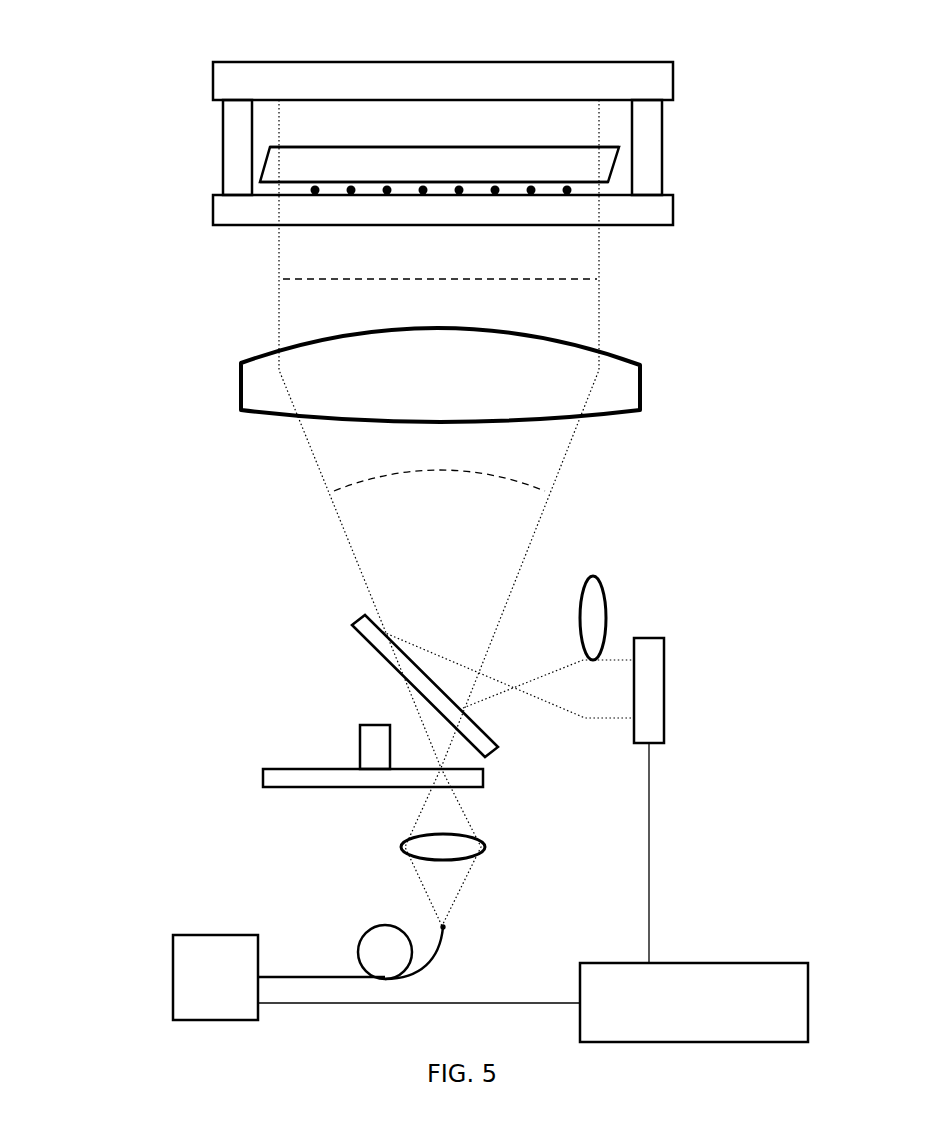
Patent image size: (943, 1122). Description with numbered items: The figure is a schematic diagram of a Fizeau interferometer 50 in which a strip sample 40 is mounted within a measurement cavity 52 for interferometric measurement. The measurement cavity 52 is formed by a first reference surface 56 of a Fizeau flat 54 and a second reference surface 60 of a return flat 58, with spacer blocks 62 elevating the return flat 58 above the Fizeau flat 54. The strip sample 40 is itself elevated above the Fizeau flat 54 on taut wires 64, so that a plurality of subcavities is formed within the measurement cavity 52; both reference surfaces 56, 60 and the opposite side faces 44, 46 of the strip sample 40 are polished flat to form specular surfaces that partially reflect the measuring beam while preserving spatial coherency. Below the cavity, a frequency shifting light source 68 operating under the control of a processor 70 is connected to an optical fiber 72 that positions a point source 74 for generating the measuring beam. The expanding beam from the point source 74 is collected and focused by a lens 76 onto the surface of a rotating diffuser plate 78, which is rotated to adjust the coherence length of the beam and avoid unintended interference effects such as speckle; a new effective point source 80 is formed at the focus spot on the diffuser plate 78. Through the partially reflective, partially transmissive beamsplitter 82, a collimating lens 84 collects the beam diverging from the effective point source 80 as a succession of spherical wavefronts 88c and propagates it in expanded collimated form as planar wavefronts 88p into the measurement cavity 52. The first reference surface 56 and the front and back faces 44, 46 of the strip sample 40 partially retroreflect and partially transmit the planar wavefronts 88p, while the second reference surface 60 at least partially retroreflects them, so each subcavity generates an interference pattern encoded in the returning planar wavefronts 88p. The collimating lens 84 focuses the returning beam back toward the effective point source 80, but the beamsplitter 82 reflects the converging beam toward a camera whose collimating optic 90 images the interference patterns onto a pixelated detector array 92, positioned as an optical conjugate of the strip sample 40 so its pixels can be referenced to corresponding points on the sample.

The Fizeau interferometer 50 is at (120, 135).
The measurement cavity 52 is at (680, 66).
The return flat 58 is at (443, 76).
The spacer blocks 62 is at (237, 118).
The Fizeau flat 54 is at (268, 216).
The second reference surface 60 is at (530, 101).
The first reference surface 56 is at (623, 192).
The strip sample 40 is at (383, 160).
The back face of the strip sample 46 is at (505, 146).
The front face of the strip sample 44 is at (412, 192).
The taut wires 64 is at (387, 192).
The planar wavefronts 88p is at (333, 287).
The collimating lens 84 is at (642, 382).
The spherical wavefronts 88c is at (352, 492).
The collimating optic 90 is at (596, 575).
The pixelated detector array 92 is at (664, 690).
The beamsplitter 82 is at (482, 740).
The rotating diffuser plate 78 is at (282, 768).
The effective point source 80 is at (434, 760).
The lens 76 is at (485, 845).
The frequency shifting light source 68 is at (215, 977).
The processor 70 is at (533, 1002).
The optical fiber 72 is at (314, 970).
The point source 74 is at (455, 922).